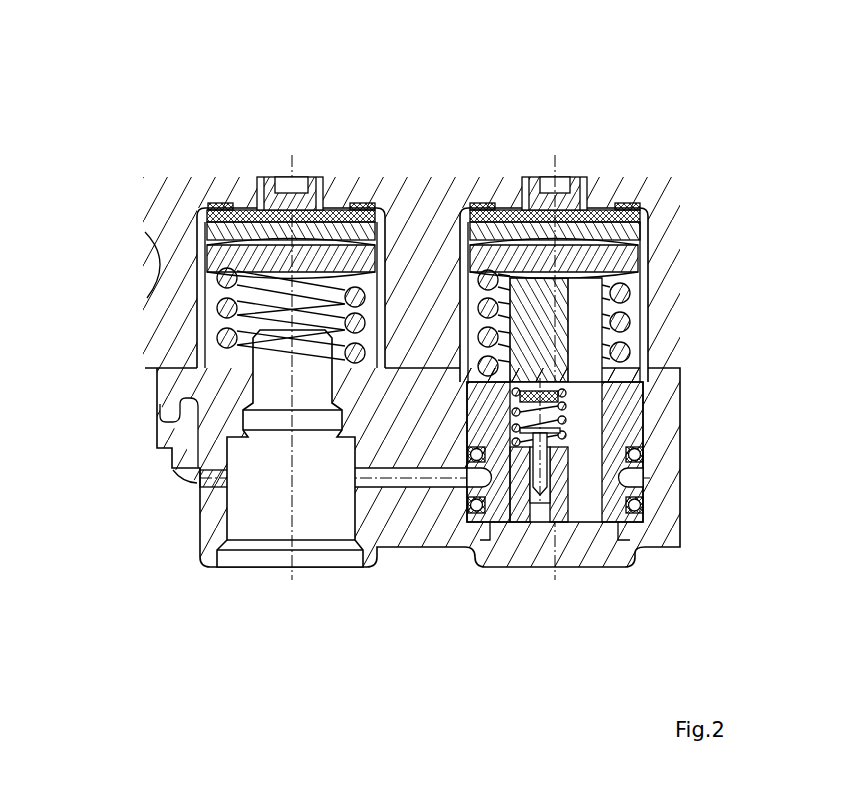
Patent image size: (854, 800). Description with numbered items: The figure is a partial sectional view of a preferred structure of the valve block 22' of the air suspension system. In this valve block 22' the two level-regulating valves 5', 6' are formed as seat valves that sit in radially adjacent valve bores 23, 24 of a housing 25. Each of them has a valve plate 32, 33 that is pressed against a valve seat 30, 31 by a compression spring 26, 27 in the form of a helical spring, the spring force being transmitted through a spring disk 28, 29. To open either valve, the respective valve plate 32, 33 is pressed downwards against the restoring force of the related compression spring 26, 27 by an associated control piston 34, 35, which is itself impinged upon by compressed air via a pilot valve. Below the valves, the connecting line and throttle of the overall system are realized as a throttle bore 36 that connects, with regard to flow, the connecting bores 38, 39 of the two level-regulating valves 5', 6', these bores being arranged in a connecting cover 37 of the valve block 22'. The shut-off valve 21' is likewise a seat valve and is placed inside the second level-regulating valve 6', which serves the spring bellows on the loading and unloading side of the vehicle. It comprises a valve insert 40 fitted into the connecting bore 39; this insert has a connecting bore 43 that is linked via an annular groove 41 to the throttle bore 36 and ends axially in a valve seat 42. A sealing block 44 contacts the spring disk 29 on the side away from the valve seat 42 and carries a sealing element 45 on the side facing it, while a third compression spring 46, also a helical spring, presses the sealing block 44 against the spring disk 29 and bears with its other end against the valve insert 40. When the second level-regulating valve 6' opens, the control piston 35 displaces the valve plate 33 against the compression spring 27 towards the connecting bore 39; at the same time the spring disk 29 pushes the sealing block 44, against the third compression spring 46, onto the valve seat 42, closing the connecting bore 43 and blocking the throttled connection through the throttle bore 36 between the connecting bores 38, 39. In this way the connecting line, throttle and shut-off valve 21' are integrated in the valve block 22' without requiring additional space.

The level-regulating valve 5' is at (294, 87).
The level-regulating valve 6' is at (554, 88).
The shut-off valve 21' is at (616, 417).
The valve block 22' is at (382, 523).
The valve bore 23 is at (205, 323).
The valve bore 24 is at (638, 323).
The housing 25 is at (165, 203).
The compression spring 26 is at (218, 278).
The compression spring 27 is at (622, 293).
The spring disk 28 is at (212, 258).
The spring disk 29 is at (620, 258).
The valve seat 30 is at (338, 195).
The valve seat 31 is at (508, 190).
The valve plate 32 is at (240, 203).
The valve plate 33 is at (603, 207).
The control piston 34 is at (272, 208).
The control piston 35 is at (575, 197).
The throttle bore 36 is at (412, 480).
The connecting cover 37 is at (212, 388).
The connecting bore 38 is at (323, 508).
The connecting bore 39 is at (588, 530).
The valve insert 40 is at (517, 500).
The annular groove 41 is at (625, 477).
The valve seat 42 is at (583, 437).
The connecting bore 43 is at (540, 503).
The sealing block 44 is at (580, 337).
The sealing element 45 is at (565, 395).
The third compression spring 46 is at (565, 418).